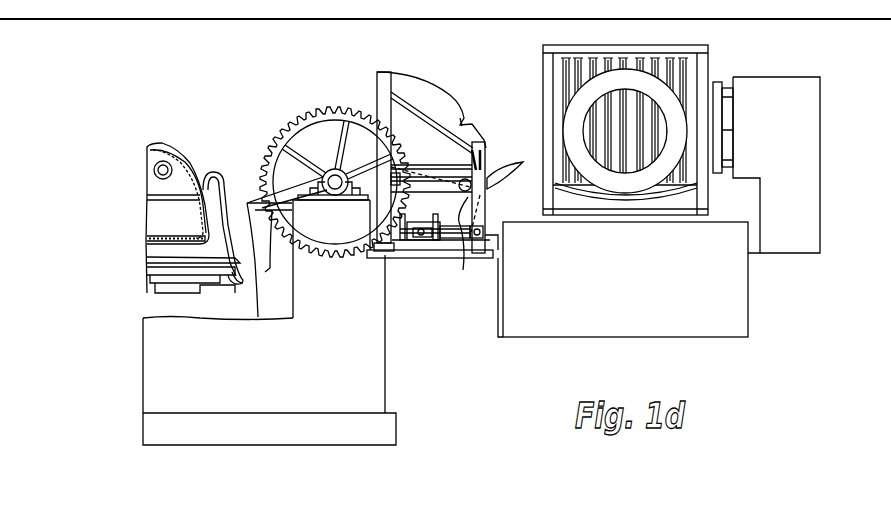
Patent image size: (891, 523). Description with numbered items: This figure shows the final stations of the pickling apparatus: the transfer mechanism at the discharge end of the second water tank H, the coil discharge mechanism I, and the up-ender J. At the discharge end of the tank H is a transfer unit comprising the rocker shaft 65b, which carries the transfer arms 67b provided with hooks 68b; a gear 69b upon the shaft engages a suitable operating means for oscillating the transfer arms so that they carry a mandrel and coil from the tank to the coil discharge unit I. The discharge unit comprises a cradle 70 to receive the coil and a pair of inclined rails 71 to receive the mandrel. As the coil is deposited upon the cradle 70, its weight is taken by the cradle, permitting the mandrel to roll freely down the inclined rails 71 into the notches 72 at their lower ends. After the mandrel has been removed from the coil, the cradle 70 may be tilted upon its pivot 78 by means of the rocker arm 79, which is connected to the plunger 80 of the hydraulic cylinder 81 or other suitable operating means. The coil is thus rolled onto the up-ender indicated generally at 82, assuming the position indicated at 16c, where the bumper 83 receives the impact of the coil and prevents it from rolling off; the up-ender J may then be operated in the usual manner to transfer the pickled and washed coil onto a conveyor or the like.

The second water tank H is at (269, 350).
The hooks 68b is at (234, 190).
The gear 69b is at (312, 113).
The rocker shaft 65b is at (336, 195).
The transfer arms 67b is at (259, 246).
The coil discharge mechanism I is at (444, 106).
The inclined rails 71 is at (418, 97).
The notches 72 is at (462, 122).
The cradle 70 is at (496, 172).
The pivot 78 is at (465, 191).
The rocker arm 79 is at (462, 240).
The plunger 80 is at (450, 232).
The hydraulic cylinder 81 is at (418, 240).
The up-ender 82 is at (546, 170).
The bumper 83 is at (723, 130).
The up-ender J is at (713, 56).
The coil position 16c is at (641, 182).